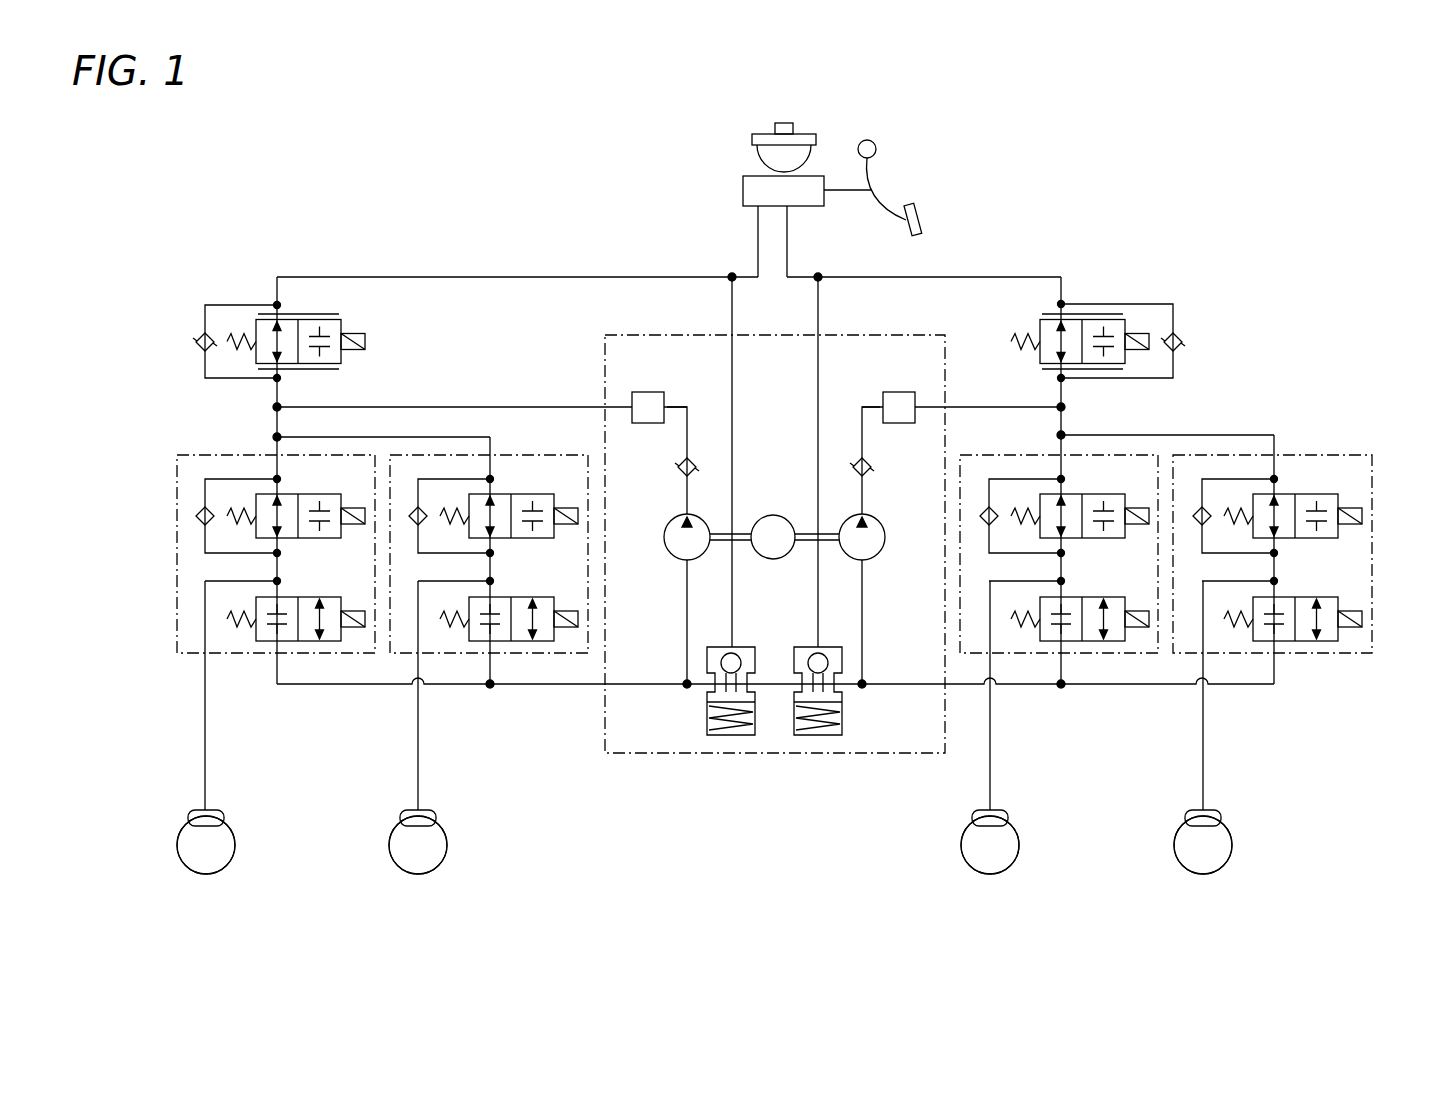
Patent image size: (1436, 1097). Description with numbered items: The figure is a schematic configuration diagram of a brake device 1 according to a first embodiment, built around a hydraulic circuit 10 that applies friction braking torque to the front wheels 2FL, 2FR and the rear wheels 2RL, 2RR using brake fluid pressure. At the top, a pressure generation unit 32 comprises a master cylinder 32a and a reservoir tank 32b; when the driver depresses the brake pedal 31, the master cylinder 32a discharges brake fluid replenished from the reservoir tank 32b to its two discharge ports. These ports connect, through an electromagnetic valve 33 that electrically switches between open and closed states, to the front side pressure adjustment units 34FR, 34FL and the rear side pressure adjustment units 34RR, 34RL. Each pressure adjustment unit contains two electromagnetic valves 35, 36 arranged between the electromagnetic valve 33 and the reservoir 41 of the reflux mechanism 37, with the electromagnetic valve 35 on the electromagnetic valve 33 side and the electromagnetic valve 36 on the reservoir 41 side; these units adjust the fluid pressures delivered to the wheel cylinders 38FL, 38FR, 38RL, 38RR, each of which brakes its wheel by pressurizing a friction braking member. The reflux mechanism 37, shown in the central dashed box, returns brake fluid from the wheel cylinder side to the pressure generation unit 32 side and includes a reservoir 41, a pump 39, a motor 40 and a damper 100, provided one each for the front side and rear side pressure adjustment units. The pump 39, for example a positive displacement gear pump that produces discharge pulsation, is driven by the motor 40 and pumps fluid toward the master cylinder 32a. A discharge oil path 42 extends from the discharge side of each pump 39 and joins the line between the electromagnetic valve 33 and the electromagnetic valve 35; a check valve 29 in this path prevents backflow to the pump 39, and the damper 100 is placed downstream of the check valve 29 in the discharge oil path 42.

The brake device 1 is at (1176, 121).
The wheel 2FR is at (204, 858).
The wheel 2FL is at (416, 858).
The wheel 2RR is at (988, 858).
The wheel 2RL is at (1201, 858).
The hydraulic circuit 10 is at (1267, 397).
The check valve 29 is at (679, 473).
The brake pedal 31 is at (926, 214).
The pressure generation unit 32 is at (723, 128).
The master cylinder 32a is at (742, 186).
The reservoir tank 32b is at (760, 133).
The electromagnetic valve 33 is at (325, 316).
The pressure adjustment unit 34FR is at (207, 430).
The pressure adjustment unit 34FL is at (540, 453).
The pressure adjustment unit 34RR is at (1040, 455).
The pressure adjustment unit 34RL is at (1290, 455).
The electromagnetic valve 35 is at (287, 494).
The electromagnetic valve 36 is at (287, 597).
The reflux mechanism 37 is at (818, 755).
The wheel cylinder 38FR is at (214, 811).
The wheel cylinder 38FL is at (427, 811).
The wheel cylinder 38RR is at (999, 811).
The wheel cylinder 38RL is at (1212, 811).
The pump 39 is at (676, 564).
The motor 40 is at (773, 560).
The reservoir 41 is at (707, 721).
The discharge oil path 42 is at (690, 412).
The damper 100 is at (648, 392).